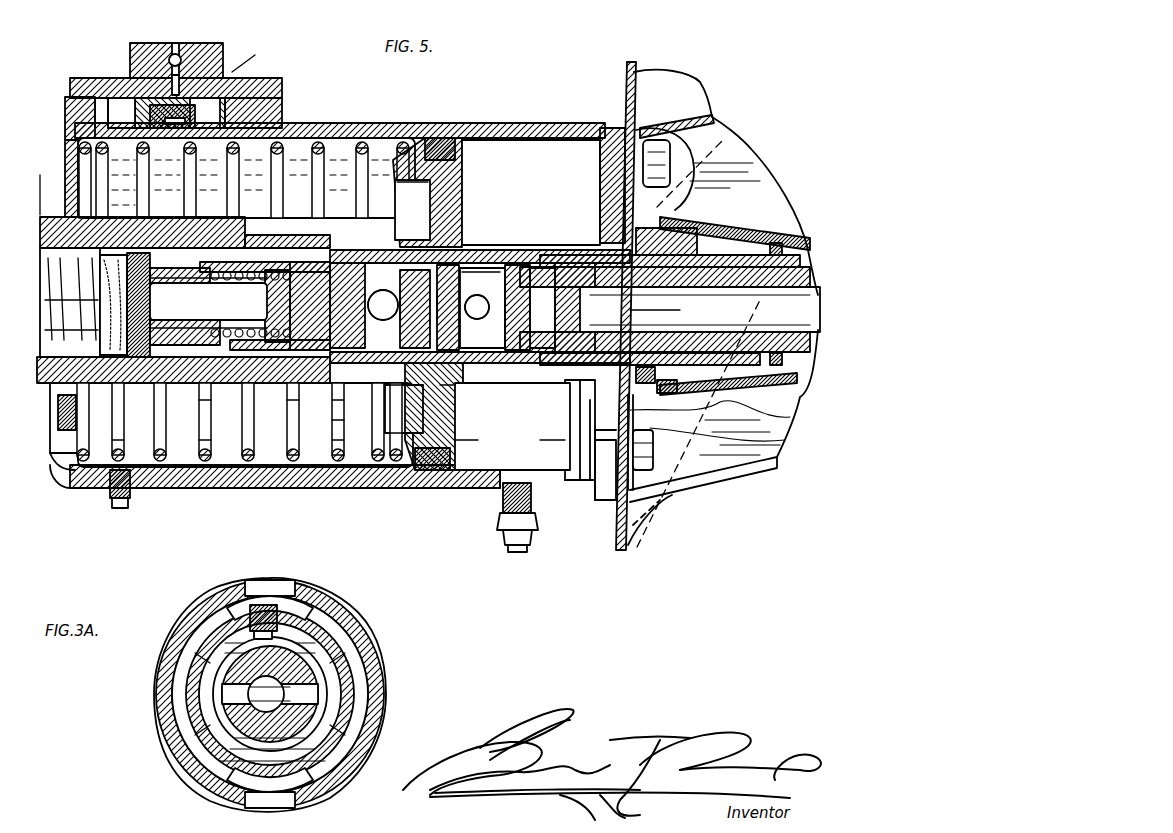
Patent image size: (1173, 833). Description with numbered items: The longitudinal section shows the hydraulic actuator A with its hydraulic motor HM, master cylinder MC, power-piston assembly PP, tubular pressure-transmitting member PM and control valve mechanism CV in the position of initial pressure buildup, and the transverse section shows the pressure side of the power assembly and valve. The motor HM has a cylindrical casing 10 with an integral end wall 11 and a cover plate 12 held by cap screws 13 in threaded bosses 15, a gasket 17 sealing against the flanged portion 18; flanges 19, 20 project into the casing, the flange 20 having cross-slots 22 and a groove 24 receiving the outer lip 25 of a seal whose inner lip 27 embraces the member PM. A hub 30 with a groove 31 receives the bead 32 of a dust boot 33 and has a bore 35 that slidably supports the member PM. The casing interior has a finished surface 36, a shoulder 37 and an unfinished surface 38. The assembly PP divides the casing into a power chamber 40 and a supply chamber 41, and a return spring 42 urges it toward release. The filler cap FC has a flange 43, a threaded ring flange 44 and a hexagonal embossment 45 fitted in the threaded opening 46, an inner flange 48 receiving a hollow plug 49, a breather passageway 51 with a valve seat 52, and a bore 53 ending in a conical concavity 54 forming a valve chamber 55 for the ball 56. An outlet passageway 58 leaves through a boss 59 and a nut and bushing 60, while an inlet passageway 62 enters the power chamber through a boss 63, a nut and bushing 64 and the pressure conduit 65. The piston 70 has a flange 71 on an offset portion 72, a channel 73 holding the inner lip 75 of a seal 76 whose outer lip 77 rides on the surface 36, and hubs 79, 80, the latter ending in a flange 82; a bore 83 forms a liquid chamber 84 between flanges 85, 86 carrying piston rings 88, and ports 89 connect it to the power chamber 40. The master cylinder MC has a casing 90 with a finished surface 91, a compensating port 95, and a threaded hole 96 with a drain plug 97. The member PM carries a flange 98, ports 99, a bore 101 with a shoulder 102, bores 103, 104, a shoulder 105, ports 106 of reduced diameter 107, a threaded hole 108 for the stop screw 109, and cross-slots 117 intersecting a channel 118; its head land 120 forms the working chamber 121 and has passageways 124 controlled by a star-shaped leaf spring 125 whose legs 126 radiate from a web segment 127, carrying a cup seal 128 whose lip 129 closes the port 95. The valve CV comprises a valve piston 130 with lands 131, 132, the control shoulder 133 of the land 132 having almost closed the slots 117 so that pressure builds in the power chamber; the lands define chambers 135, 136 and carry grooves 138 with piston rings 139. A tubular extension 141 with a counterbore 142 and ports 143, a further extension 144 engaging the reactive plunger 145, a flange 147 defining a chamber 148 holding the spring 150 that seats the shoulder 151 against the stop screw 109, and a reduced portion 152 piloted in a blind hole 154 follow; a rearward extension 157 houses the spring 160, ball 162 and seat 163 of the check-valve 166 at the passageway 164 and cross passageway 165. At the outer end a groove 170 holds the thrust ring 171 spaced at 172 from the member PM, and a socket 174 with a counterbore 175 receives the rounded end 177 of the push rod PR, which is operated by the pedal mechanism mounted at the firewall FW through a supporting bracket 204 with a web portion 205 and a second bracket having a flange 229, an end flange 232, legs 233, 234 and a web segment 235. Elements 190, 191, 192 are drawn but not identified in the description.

In FIG. 5, the cylindrical casing 10 is at (355, 490).
In FIG. 5, the integral end wall 11 is at (68, 150).
In FIG. 5, the cover plate 12 is at (618, 95).
In FIG. 5, the cap screws 13 is at (662, 160).
In FIG. 5, the threaded bosses 15 is at (605, 500).
In FIG. 5, the ring-type gasket 17 is at (612, 130).
In FIG. 5, the peripheral flanged portion 18 is at (608, 493).
In FIG. 5, the offset annular flange 19 is at (580, 140).
In FIG. 5, the inner annular flange 20 is at (585, 480).
In FIG. 5, the cross-slots 22 is at (598, 395).
In FIG. 5, the internal annular groove 24 is at (650, 215).
In FIG. 5, the outer lip 25 is at (582, 195).
In FIG. 5, the inner sealing lip 27 is at (655, 227).
In FIG. 5, the hub 30 is at (672, 240).
In FIG. 5, the annular groove 31 is at (685, 392).
In FIG. 5, the forward annular bead 32 is at (660, 396).
In FIG. 5, the flexible dust boot 33 is at (808, 398).
In FIG. 5, the longitudinal bore 35 is at (712, 255).
In FIG. 5, the finished cylindrical surface 36 is at (322, 490).
In FIG. 5, the internal annular shoulder 37 is at (250, 470).
In FIG. 5, the unfinished cylindrical surface 38 is at (210, 467).
In FIG. 5, the power chamber 40 is at (563, 483).
In FIG. 5, the supply chamber 41 is at (232, 490).
In FIG. 5, the compression spring 42 is at (160, 462).
In FIG. 5, the exterior annular flange 43 is at (82, 78).
In FIG. 5, the externally threaded ring flange 44 is at (66, 115).
In FIG. 5, the exterior embossment 45 is at (225, 60).
In FIG. 5, the internally threaded opening 46 is at (70, 95).
In FIG. 5, the inner ring-type flange 48 is at (115, 78).
In FIG. 5, the hollow plug 49 is at (238, 76).
In FIG. 5, the breather passageway 51 is at (178, 55).
In FIG. 5, the valve seat 52 is at (195, 50).
In FIG. 5, the coaxial bore 53 is at (138, 48).
In FIG. 5, the conical concavity 54 is at (228, 68).
In FIG. 5, the valve chamber 55 is at (160, 45).
In FIG. 5, the check-valve ball 56 is at (185, 60).
In FIG. 5, the fluid outlet passageway 58 is at (62, 470).
In FIG. 5, the internally threaded boss 59 is at (52, 470).
In FIG. 5, the nut and bushing 60 is at (48, 455).
In FIG. 5, the fluid inlet passageway 62 is at (503, 490).
In FIG. 5, the internally threaded boss 63 is at (510, 535).
In FIG. 5, the nut and bushing 64 is at (540, 546).
In FIG. 5, the fluid pressure conduit 65 is at (522, 552).
In FIG. 5, the piston 70 is at (447, 172).
In FIG. 3A, the piston 70 is at (172, 765).
In FIG. 5, the peripheral annular flange 71 is at (432, 140).
In FIG. 5, the annular offset portion 72 is at (396, 160).
In FIG. 5, the external annular channel 73 is at (442, 140).
In FIG. 5, the inner annular lip 75 is at (425, 472).
In FIG. 5, the double-lip flexible ring-type seal 76 is at (452, 148).
In FIG. 5, the outer sealing lip 77 is at (440, 472).
In FIG. 5, the cylindrical hub 79 is at (425, 238).
In FIG. 5, the longer hub 80 is at (507, 265).
In FIG. 3A, the longer hub 80 is at (365, 690).
In FIG. 5, the outturned annular flange 82 is at (588, 250).
In FIG. 5, the longitudinal bore 83 is at (522, 268).
In FIG. 3A, the longitudinal bore 83 is at (342, 725).
In FIG. 5, the annular liquid chamber 84 is at (500, 268).
In FIG. 3A, the annular liquid chamber 84 is at (345, 642).
In FIG. 5, the internal annular flange 85 is at (412, 191).
In FIG. 5, the internal annular flange 86 is at (562, 250).
In FIG. 5, the piston ring 88 is at (404, 421).
In FIG. 5, the ports 89 is at (477, 432).
In FIG. 3A, the ports 89 is at (286, 588).
In FIG. 5, the master cylinder casing 90 is at (50, 184).
In FIG. 5, the finished inner cylindrical surface 91 is at (52, 272).
In FIG. 5, the compensating port 95 is at (129, 430).
In FIG. 5, the threaded hole 96 is at (100, 490).
In FIG. 5, the drain plug 97 is at (120, 508).
In FIG. 5, the annular flange 98 is at (349, 432).
In FIG. 5, the ports 99 is at (303, 393).
In FIG. 5, the longitudinal bore 101 is at (354, 414).
In FIG. 3A, the longitudinal bore 101 is at (330, 662).
In FIG. 5, the internal annular shoulder 102 is at (285, 240).
In FIG. 5, the reduced diameter coaxial bore 103 is at (248, 240).
In FIG. 5, the smaller diameter coaxial bore 104 is at (205, 240).
In FIG. 5, the internal annular shoulder 105 is at (218, 240).
In FIG. 5, the ports 106 is at (221, 407).
In FIG. 5, the reduced diameter 107 is at (222, 430).
In FIG. 5, the threaded hole 108 is at (483, 262).
In FIG. 3A, the threaded hole 108 is at (300, 612).
In FIG. 5, the stop screw 109 is at (478, 262).
In FIG. 3A, the stop screw 109 is at (265, 600).
In FIG. 5, the control cross-slots 117 is at (539, 432).
In FIG. 3A, the control cross-slots 117 is at (230, 600).
In FIG. 5, the internal annular channel 118 is at (480, 348).
In FIG. 3A, the internal annular channel 118 is at (330, 700).
In FIG. 5, the head land 120 is at (135, 390).
In FIG. 5, the working chamber 121 is at (48, 340).
In FIG. 5, the longitudinal passageways 124 is at (143, 242).
In FIG. 5, the star-shaped leaf spring 125 is at (168, 388).
In FIG. 5, the leg 126 is at (158, 288).
In FIG. 5, the central circular web segment 127 is at (162, 325).
In FIG. 5, the cup-shaped pliant seal 128 is at (118, 338).
In FIG. 5, the peripheral sealing lip 129 is at (100, 268).
In FIG. 5, the control valve piston 130 is at (792, 268).
In FIG. 5, the sealing land 131 is at (395, 266).
In FIG. 3A, the sealing land 131 is at (320, 632).
In FIG. 5, the working land 132 is at (548, 345).
In FIG. 5, the control shoulder 133 is at (548, 307).
In FIG. 5, the annular liquid chamber 135 is at (300, 365).
In FIG. 5, the annular liquid chamber 136 is at (484, 368).
In FIG. 3A, the annular liquid chamber 136 is at (215, 722).
In FIG. 5, the external annular groove 138 is at (481, 286).
In FIG. 5, the piston ring 139 is at (409, 397).
In FIG. 5, the tubular extension 141 is at (354, 398).
In FIG. 5, the counterbore 142 is at (320, 236).
In FIG. 5, the ports 143 is at (330, 250).
In FIG. 5, the reduced diameter extension 144 is at (262, 325).
In FIG. 5, the reactive plunger 145 is at (230, 305).
In FIG. 5, the external annular flange 147 is at (300, 262).
In FIG. 5, the variable fluid chamber 148 is at (195, 410).
In FIG. 5, the compression spring 150 is at (250, 248).
In FIG. 5, the annular shoulder 151 is at (470, 385).
In FIG. 3A, the annular shoulder 151 is at (225, 625).
In FIG. 5, the reduced diameter portion 152 is at (265, 292).
In FIG. 5, the blind hole 154 is at (268, 262).
In FIG. 5, the rearward tubular extension 157 is at (280, 236).
In FIG. 5, the compression spring 160 is at (360, 365).
In FIG. 5, the ball-type element 162 is at (383, 305).
In FIG. 3A, the ball-type element 162 is at (240, 682).
In FIG. 5, the valve seat 163 is at (418, 305).
In FIG. 5, the longitudinal liquid passageway 164 is at (448, 403).
In FIG. 3A, the longitudinal liquid passageway 164 is at (360, 668).
In FIG. 5, the cross passageway 165 is at (480, 307).
In FIG. 3A, the cross passageway 165 is at (230, 692).
In FIG. 5, the check-valve 166 is at (450, 305).
In FIG. 3A, the check-valve 166 is at (210, 670).
In FIG. 5, the annular external groove 170 is at (778, 360).
In FIG. 5, the split thrust ring 171 is at (770, 365).
In FIG. 5, the predetermined spacing 172 is at (792, 243).
In FIG. 5, the socket 174 is at (582, 296).
In FIG. 5, the counterbore 175 is at (720, 330).
In FIG. 5, the rounded end 177 is at (654, 301).
In FIG. 5, the spring 190 is at (82, 307).
In FIG. 5, the packing 191 is at (95, 316).
In FIG. 5, the spring 192 is at (82, 286).
In FIG. 5, the supporting bracket 204 is at (672, 506).
In FIG. 5, the web portion 205 is at (640, 546).
In FIG. 5, the outturned flange 229 is at (718, 488).
In FIG. 5, the vertical outturned end flange 232 is at (650, 140).
In FIG. 5, the leg 233 is at (765, 460).
In FIG. 5, the leg 234 is at (748, 175).
In FIG. 5, the web segment 235 is at (712, 117).
In FIG. 5, the filler cap FC is at (253, 55).
In FIG. 5, the firewall FW is at (622, 47).
In FIG. 5, the hydraulic motor HM is at (524, 114).
In FIG. 5, the master cylinder MC is at (56, 204).
In FIG. 5, the power-piston assembly PP is at (466, 145).
In FIG. 3A, the power-piston assembly PP is at (365, 782).
In FIG. 5, the push rod PR is at (820, 307).
In FIG. 5, the tubular pressure-transmitting member PM is at (749, 238).
In FIG. 3A, the tubular pressure-transmitting member PM is at (182, 730).
In FIG. 5, the control valve mechanism CV is at (545, 394).
In FIG. 3A, the control valve mechanism CV is at (307, 759).
In FIG. 5, the hydraulic actuator A is at (363, 555).